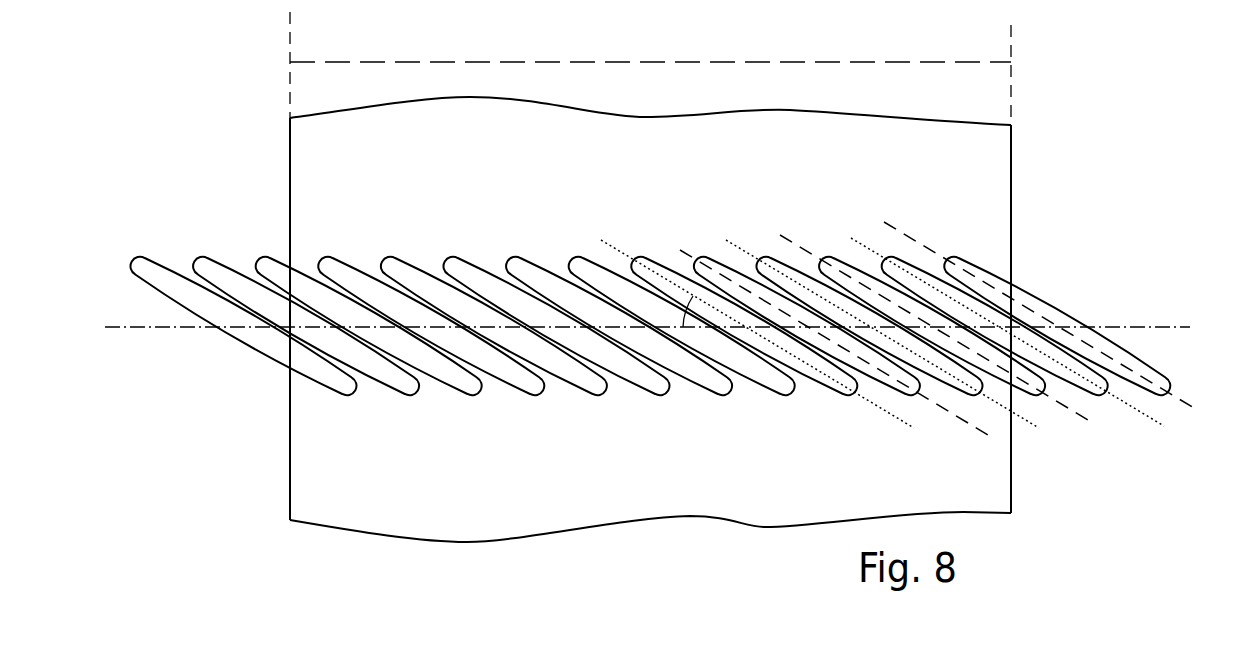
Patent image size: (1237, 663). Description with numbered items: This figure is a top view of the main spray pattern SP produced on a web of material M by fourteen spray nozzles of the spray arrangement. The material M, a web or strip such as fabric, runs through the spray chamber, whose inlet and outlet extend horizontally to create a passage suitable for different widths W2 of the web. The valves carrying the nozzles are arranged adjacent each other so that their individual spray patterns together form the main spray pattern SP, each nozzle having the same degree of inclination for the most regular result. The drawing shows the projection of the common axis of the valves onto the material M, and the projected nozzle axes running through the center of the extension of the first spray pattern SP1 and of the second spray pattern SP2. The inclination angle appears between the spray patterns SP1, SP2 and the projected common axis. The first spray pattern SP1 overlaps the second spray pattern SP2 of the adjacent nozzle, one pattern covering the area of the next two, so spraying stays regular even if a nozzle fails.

The width of the web W2 is at (650, 68).
The material M is at (497, 185).
The main spray pattern SP is at (716, 248).
The first spray pattern SP1 is at (1118, 345).
The second spray pattern SP2 is at (1060, 378).